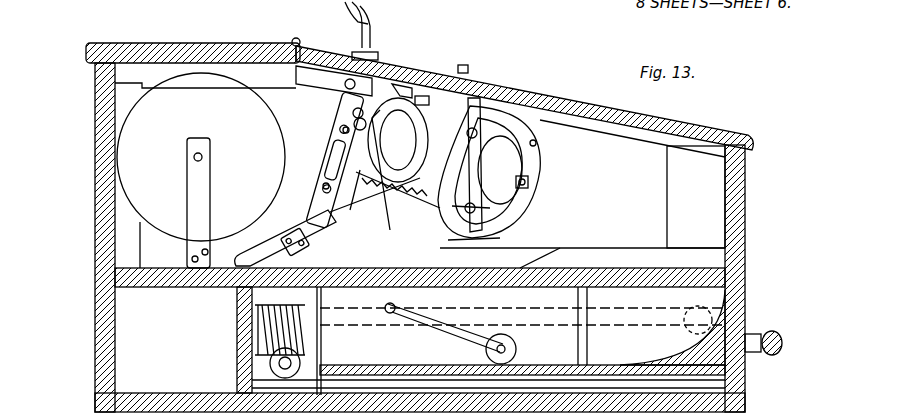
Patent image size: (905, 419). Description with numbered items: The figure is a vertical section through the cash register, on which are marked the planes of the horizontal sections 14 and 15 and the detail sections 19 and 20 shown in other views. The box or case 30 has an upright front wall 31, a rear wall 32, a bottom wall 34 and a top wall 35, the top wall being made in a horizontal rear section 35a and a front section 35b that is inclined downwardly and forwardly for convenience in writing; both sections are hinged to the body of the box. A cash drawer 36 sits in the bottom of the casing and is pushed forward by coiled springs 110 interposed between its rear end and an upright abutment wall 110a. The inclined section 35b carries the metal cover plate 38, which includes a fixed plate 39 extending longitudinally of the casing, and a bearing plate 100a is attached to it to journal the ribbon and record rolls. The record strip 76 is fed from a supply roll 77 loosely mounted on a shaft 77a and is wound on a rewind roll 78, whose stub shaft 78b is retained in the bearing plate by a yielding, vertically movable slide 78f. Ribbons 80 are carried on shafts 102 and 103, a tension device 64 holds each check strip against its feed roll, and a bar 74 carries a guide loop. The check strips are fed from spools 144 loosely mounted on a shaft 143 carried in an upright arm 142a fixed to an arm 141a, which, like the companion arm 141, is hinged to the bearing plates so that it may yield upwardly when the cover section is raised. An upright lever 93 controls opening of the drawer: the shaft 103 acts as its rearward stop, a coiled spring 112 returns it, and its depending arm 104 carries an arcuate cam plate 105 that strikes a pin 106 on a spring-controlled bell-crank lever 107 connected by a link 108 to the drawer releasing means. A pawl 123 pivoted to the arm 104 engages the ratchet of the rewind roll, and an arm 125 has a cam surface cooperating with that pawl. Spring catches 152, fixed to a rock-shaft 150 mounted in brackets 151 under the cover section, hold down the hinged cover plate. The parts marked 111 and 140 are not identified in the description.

The section line 14— 14 is at (94, 252).
The section line 15— 15 is at (94, 288).
The section plane 19— 19 is at (372, 166).
The section line 20— 20 is at (459, 165).
The box or case 30 is at (84, 124).
The front wall 31 is at (735, 200).
The rear wall 32 is at (94, 165).
The bottom wall 34 is at (96, 406).
The top wall 35 is at (305, 31).
The rear top section 35a is at (190, 46).
The front top section 35b is at (696, 130).
The cash drawer 36 is at (752, 379).
The metal cover plate 38 is at (448, 61).
The fixed plate 39 is at (548, 102).
The tension device 64 is at (538, 144).
The bar 74 is at (530, 182).
The record strip 76 is at (444, 138).
The record supply roll 77 is at (482, 203).
The shaft 77a is at (536, 203).
The record rewind roll 78 is at (326, 168).
The stub shaft 78b is at (322, 190).
The vertically movable slide 78f is at (340, 136).
The ribbons 80 is at (404, 82).
The upright lever 93 is at (366, 38).
The bearing plate 100a is at (572, 110).
The ribbon roll shaft 102 is at (474, 128).
The ribbon roll shaft 103 is at (339, 112).
The arm 104 is at (484, 226).
The arcuate cam plate 105 is at (522, 307).
The pin 106 is at (488, 339).
The bell-crank lever 107 is at (450, 327).
The link 108 is at (327, 222).
The coiled springs 110 is at (248, 340).
The upright abutment wall 110a is at (240, 380).
The lug 111 is at (476, 76).
The coiled spring 112 is at (394, 194).
The pawl 123 is at (343, 242).
The arm 125 is at (398, 184).
The link 140 is at (540, 262).
The arm 141 is at (284, 116).
The arm 141a is at (197, 238).
The upright arm 142a is at (204, 184).
The shaft 143 is at (203, 157).
The spools 144 is at (354, 112).
The rock-shaft 150 is at (392, 46).
The brackets 151 is at (345, 80).
The spring catches 152 is at (358, 52).